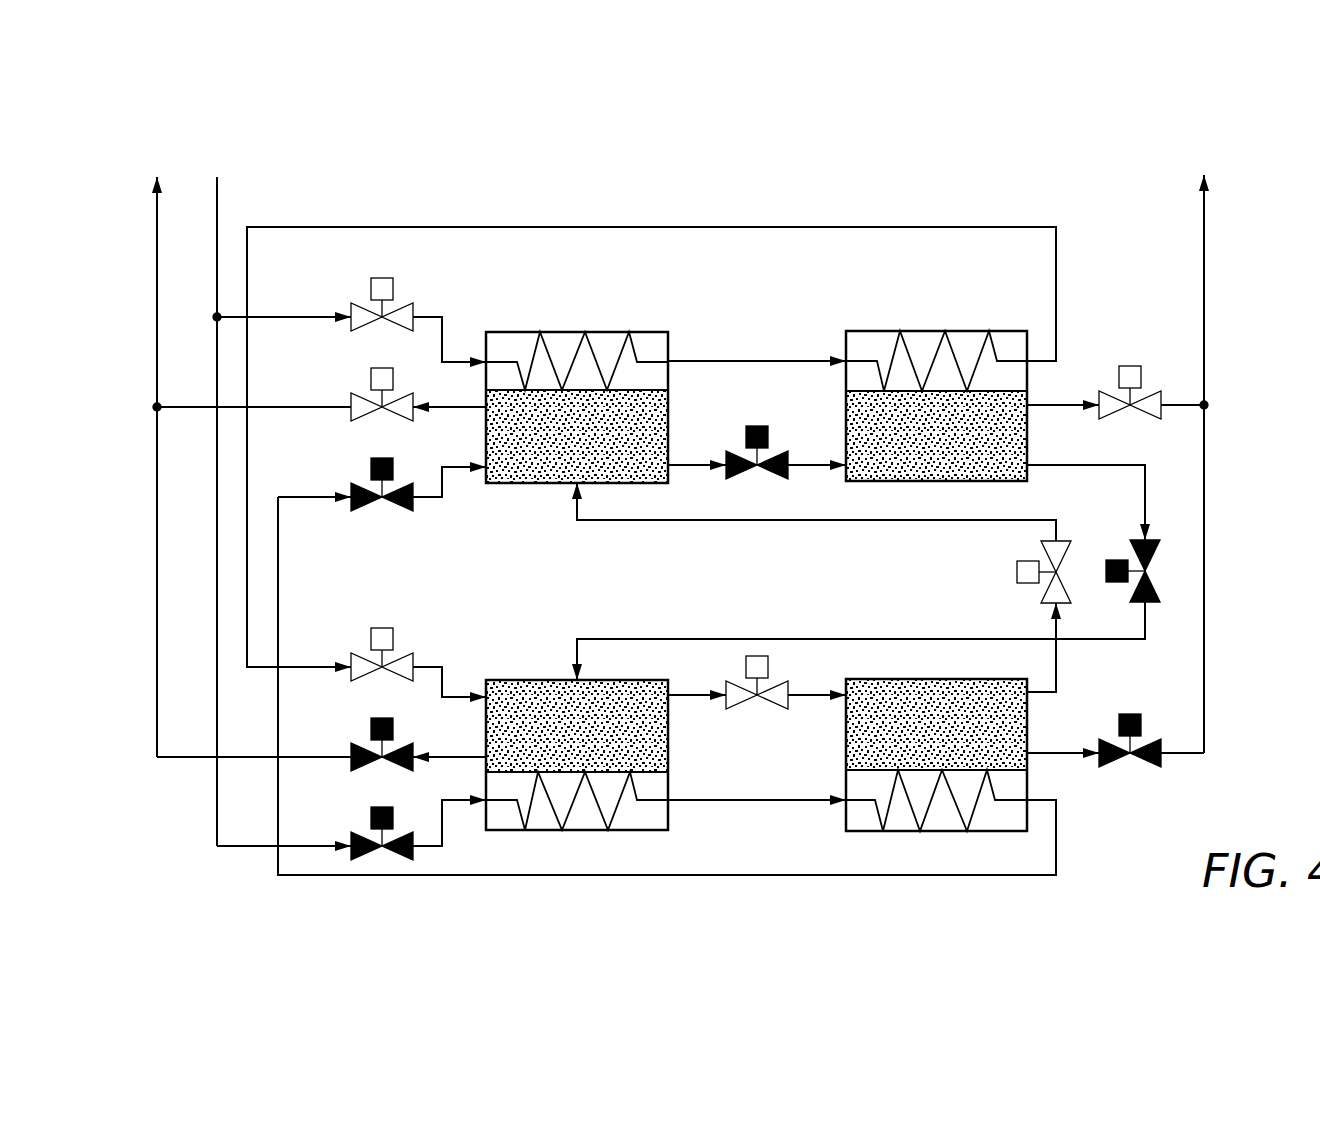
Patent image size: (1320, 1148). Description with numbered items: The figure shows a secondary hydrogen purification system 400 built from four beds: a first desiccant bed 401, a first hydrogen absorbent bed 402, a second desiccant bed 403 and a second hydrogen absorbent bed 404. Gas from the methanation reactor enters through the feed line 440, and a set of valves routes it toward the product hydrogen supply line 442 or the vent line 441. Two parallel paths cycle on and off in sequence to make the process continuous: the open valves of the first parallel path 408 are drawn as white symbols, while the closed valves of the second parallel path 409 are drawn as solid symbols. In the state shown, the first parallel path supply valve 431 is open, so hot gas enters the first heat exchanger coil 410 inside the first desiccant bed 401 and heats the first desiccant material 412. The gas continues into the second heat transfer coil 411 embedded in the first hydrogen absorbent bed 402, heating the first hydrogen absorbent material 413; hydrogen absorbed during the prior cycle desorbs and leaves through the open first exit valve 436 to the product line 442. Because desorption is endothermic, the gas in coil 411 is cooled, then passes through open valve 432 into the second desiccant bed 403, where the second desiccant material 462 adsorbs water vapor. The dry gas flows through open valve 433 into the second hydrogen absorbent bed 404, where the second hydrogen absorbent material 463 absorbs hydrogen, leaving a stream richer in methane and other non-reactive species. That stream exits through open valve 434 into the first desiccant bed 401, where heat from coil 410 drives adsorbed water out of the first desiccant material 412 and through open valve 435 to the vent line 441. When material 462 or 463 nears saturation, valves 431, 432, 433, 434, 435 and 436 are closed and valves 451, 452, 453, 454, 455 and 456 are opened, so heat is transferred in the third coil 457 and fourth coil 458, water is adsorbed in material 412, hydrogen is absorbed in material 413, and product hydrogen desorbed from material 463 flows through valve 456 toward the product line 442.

The secondary hydrogen purification system 400 is at (877, 155).
The first desiccant bed 401 is at (614, 399).
The first H2 absorbent bed 402 is at (914, 402).
The second desiccant bed 403 is at (622, 747).
The second H2 absorbent bed 404 is at (911, 757).
The first parallel path 408 is at (372, 186).
The second parallel path 409 is at (535, 892).
The first heat exchanger coil 410 is at (563, 345).
The second heat transfer coil 411 is at (922, 346).
The first desiccant material 412 is at (643, 441).
The first H2 absorbent material 413 is at (955, 470).
The first parallel path supply valve 431 is at (381, 278).
The open valve 432 is at (378, 642).
The open valve 433 is at (768, 670).
The open valve 434 is at (1017, 562).
The open valve 435 is at (371, 384).
The first exit valve 436 is at (1130, 366).
The feed line 440 is at (217, 187).
The vent line 441 is at (155, 192).
The product hydrogen supply line 442 is at (1204, 185).
The second parallel path supply valve 451 is at (371, 824).
The closed valve 452 is at (371, 468).
The closed valve 453 is at (770, 444).
The closed valve 454 is at (1108, 558).
The closed valve 455 is at (371, 728).
The closed valve 456 is at (1128, 714).
The third coil 457 is at (625, 823).
The fourth coil 458 is at (945, 820).
The second desiccant material 462 is at (648, 735).
The second H2 absorbent material 463 is at (868, 728).